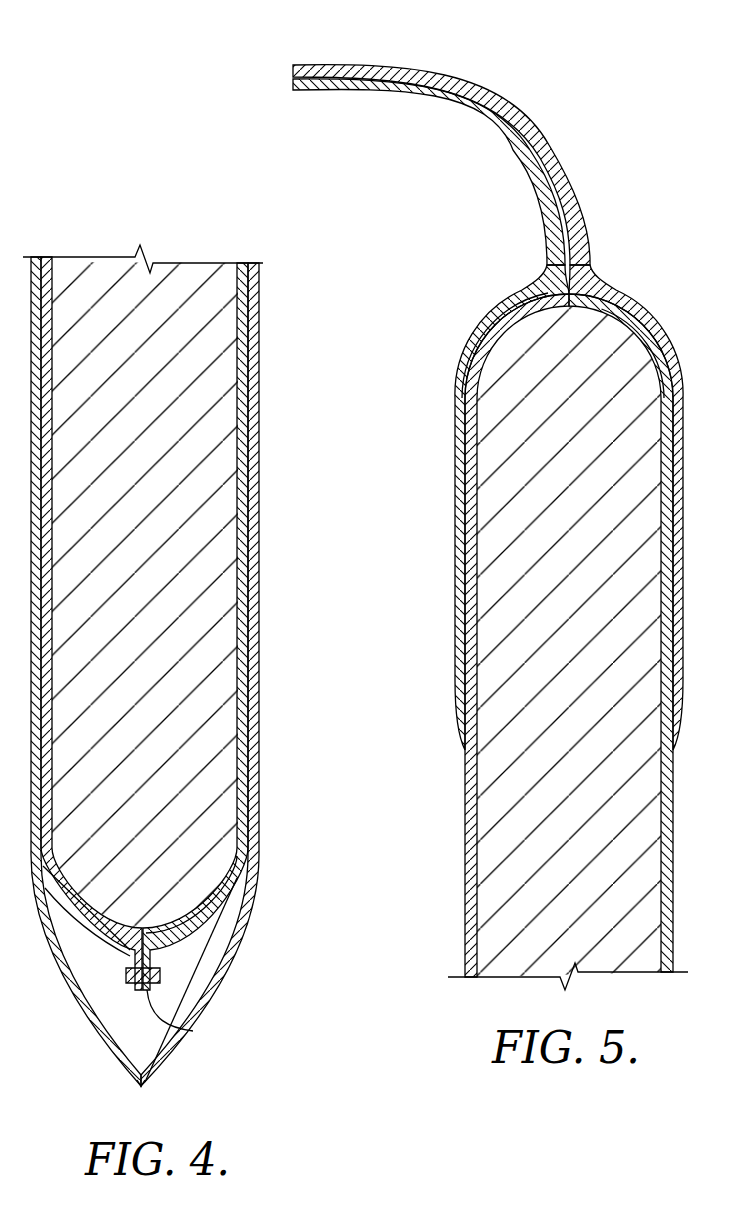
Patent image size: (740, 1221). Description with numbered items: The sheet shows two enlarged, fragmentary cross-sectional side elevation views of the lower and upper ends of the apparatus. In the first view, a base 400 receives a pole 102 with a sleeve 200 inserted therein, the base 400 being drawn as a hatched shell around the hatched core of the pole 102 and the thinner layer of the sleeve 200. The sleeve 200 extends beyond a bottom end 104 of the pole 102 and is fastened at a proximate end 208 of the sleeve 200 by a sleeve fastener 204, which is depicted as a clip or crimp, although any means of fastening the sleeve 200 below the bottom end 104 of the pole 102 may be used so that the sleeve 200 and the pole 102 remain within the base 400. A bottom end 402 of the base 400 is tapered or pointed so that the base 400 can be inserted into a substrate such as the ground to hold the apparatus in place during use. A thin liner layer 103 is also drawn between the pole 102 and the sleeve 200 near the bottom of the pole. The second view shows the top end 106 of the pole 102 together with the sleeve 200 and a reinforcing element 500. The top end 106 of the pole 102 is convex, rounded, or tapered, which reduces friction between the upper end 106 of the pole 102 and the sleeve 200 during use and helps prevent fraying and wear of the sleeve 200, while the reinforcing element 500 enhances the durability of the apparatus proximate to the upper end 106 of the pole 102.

In FIG. 4, the pole 102 is at (205, 540).
In FIG. 5, the pole 102 is at (516, 695).
In FIG. 4, the inner liner layer 103 is at (236, 873).
In FIG. 5, the inner liner layer 103 is at (627, 320).
In FIG. 4, the bottom end of the pole 104 is at (128, 960).
In FIG. 5, the top end of the pole 106 is at (530, 294).
In FIG. 4, the sleeve 200 is at (233, 915).
In FIG. 5, the sleeve 200 is at (375, 67).
In FIG. 4, the sleeve fastener 204 is at (162, 976).
In FIG. 4, the proximate end of the sleeve 208 is at (193, 1034).
In FIG. 4, the base 400 is at (253, 636).
In FIG. 4, the bottom end of the base 402 is at (140, 1088).
In FIG. 5, the reinforcing element 500 is at (488, 84).